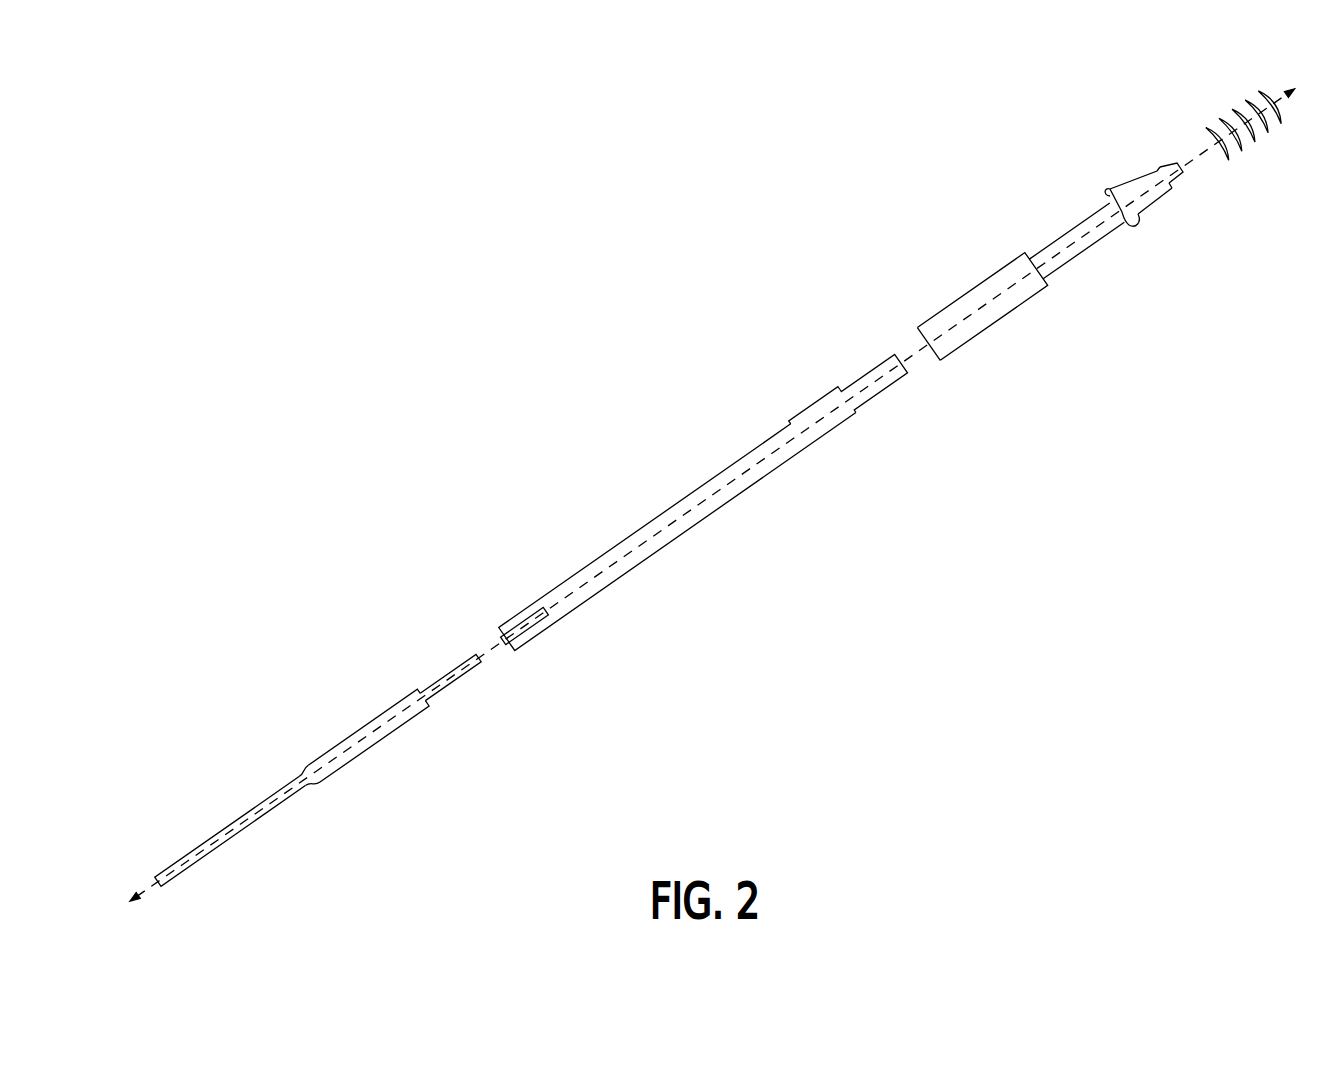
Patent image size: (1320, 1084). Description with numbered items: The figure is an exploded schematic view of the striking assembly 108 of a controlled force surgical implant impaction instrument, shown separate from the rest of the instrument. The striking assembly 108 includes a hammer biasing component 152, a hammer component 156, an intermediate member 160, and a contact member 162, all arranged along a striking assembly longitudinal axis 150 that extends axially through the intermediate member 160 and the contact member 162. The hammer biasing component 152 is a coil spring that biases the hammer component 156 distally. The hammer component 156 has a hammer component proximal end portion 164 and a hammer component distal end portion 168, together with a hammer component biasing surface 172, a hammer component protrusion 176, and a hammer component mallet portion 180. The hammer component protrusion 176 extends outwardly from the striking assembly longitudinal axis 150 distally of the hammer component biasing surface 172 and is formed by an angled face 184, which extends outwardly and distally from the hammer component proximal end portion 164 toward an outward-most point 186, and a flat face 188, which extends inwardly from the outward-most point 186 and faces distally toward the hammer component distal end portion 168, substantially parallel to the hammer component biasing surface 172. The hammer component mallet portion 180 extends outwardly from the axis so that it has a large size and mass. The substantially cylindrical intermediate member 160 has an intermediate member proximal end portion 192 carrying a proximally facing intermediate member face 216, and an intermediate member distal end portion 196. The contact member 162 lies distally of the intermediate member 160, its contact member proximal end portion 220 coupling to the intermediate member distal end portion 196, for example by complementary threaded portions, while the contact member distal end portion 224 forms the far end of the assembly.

The striking assembly 108 is at (640, 366).
The striking assembly longitudinal axis 150 is at (398, 738).
The hammer biasing component 152 is at (1230, 111).
The hammer component 156 is at (1076, 252).
The intermediate member 160 is at (720, 497).
The contact member 162 is at (333, 777).
The hammer component proximal end portion 164 is at (1155, 199).
The hammer component distal end portion 168 is at (943, 350).
The hammer component biasing surface 172 is at (1178, 184).
The hammer component protrusion 176 is at (1134, 227).
The hammer component mallet portion 180 is at (1013, 307).
The angled face 184 is at (1124, 184).
The outward-most point 186 is at (1107, 188).
The flat face 188 is at (1110, 200).
The intermediate member proximal end portion 192 is at (872, 394).
The intermediate member distal end portion 196 is at (547, 620).
The intermediate member face 216 is at (912, 372).
The contact member proximal end portion 220 is at (450, 683).
The contact member distal end portion 224 is at (185, 873).